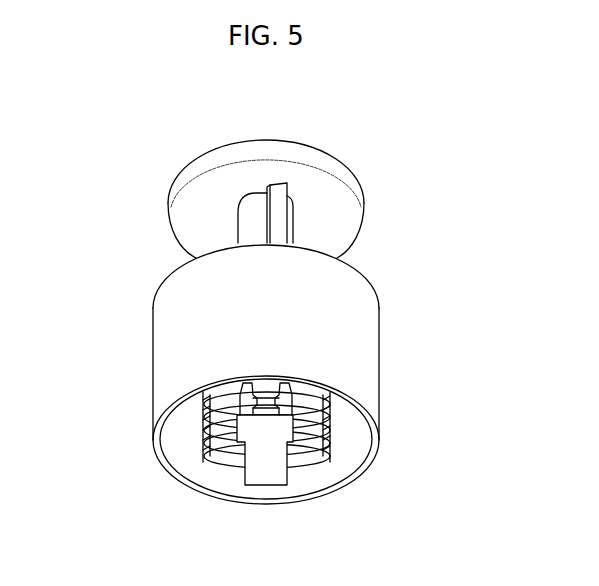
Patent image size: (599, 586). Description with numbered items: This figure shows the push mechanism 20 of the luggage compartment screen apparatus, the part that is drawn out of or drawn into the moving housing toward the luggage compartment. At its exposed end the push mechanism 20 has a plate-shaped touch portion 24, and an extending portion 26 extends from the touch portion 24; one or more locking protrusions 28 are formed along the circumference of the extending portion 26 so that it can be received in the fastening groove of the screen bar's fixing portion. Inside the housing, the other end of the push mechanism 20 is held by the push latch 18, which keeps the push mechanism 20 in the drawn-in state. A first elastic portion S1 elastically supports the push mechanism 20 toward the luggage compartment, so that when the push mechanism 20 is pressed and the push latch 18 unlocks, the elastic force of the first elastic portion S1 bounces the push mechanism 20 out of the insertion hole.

The push mechanism 20 is at (188, 152).
The touch portion 24 is at (302, 151).
The extending portion 26 is at (248, 218).
The locking protrusion 28 is at (278, 215).
The first elastic portion S1 is at (205, 458).
The push latch 18 is at (267, 447).